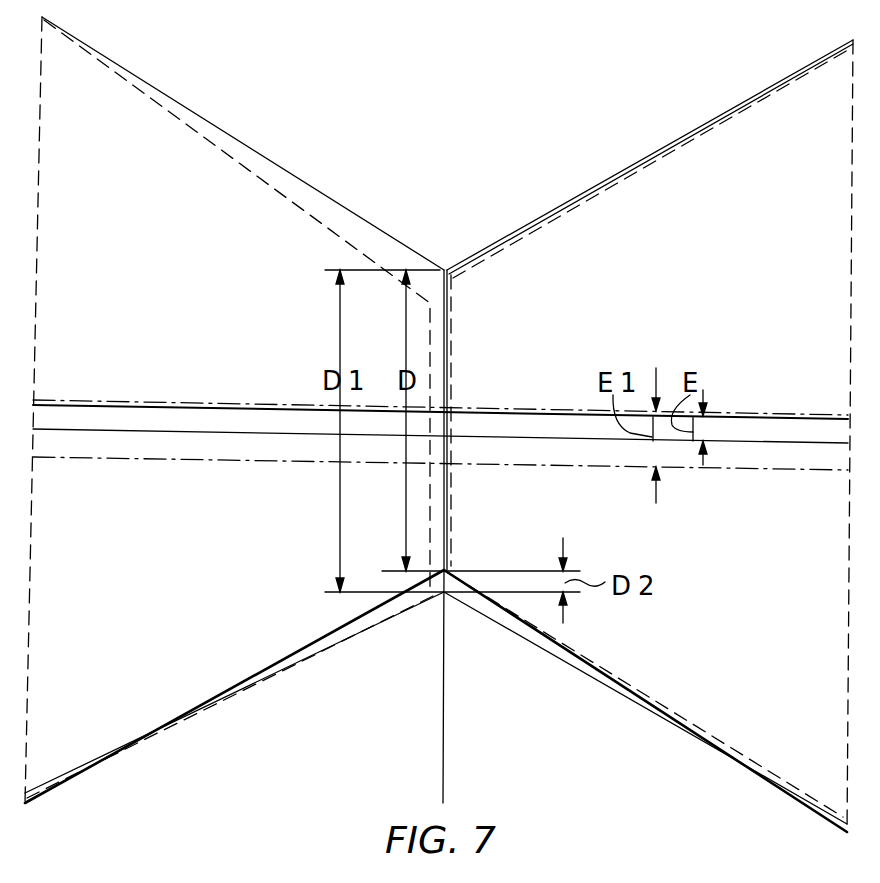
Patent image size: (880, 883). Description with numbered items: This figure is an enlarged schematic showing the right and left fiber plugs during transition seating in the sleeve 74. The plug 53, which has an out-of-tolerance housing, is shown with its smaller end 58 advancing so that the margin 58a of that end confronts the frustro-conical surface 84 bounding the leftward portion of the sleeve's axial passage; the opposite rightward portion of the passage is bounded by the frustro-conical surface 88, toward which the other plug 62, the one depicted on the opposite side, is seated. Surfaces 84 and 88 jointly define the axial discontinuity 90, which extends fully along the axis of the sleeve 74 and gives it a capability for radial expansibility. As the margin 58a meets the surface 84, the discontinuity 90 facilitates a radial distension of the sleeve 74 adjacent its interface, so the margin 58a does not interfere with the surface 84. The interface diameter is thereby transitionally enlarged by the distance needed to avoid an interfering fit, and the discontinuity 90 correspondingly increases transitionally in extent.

The plug 53 is at (277, 193).
The sleeve 74 is at (385, 228).
The upper right panel 62 is at (718, 123).
The end 58 is at (430, 330).
The margin 58a is at (433, 595).
The frustro-conical surface 84 is at (243, 682).
The frustro-conical surface 88 is at (645, 697).
The axial discontinuity 90 is at (702, 431).